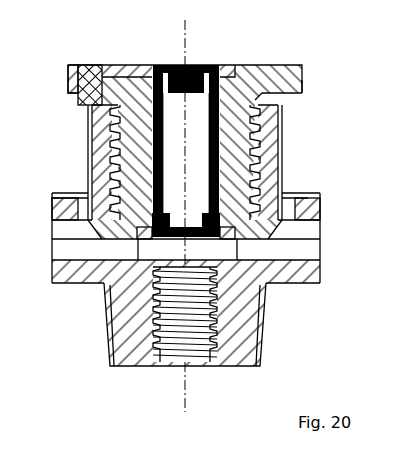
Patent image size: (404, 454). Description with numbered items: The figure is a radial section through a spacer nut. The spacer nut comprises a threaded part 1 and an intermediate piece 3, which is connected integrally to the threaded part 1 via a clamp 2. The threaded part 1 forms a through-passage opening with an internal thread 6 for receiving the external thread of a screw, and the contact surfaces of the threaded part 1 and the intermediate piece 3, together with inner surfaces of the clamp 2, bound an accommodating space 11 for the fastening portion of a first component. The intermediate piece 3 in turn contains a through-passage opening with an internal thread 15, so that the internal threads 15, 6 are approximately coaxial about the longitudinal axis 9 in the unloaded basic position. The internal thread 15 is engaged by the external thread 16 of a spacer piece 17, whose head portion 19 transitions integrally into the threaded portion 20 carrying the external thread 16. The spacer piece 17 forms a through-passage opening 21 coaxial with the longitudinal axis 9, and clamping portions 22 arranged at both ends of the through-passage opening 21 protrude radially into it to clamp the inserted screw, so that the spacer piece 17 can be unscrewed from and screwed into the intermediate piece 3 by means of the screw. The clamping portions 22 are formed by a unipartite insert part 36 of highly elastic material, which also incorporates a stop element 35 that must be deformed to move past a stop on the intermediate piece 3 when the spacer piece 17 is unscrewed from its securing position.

The threaded part 1 is at (250, 323).
The clamp 2 is at (308, 238).
The intermediate piece 3 is at (272, 150).
The internal thread 6 is at (156, 346).
The longitudinal axis 9 is at (180, 408).
The accommodating space 11 is at (80, 246).
The internal thread 15 is at (313, 162).
The external thread 16 is at (258, 178).
The spacer piece 17 is at (305, 73).
The head portion 19 is at (304, 87).
The threaded portion 20 is at (257, 117).
The through-passage opening 21 is at (180, 162).
The clamping portions 22 is at (185, 77).
The stop element 35 is at (76, 101).
The insert part 36 is at (93, 88).